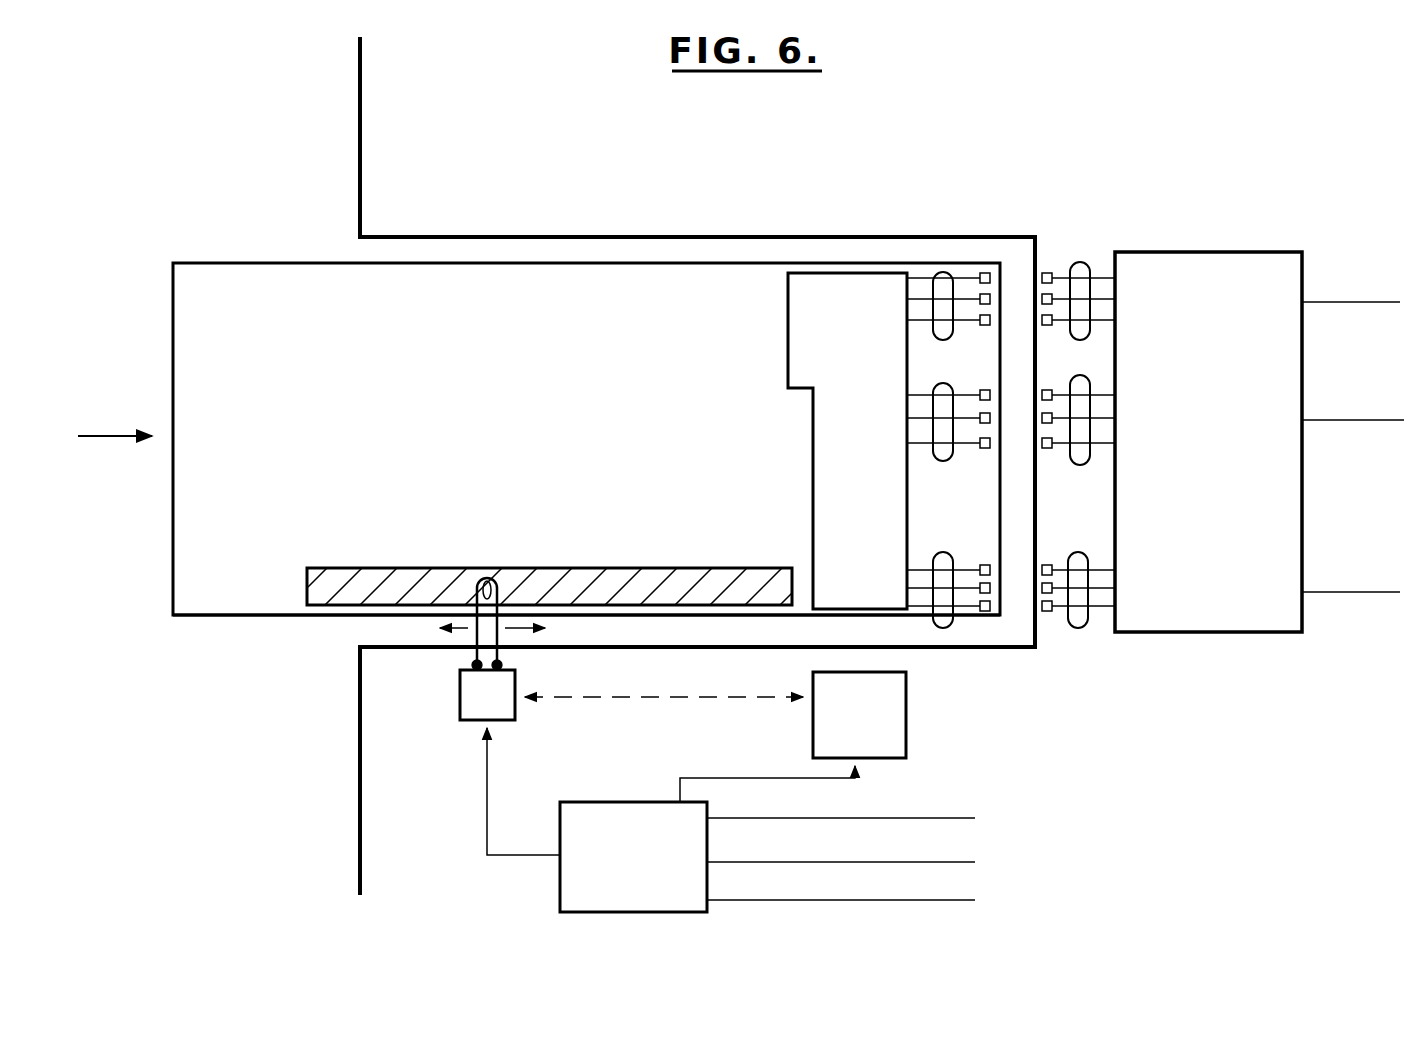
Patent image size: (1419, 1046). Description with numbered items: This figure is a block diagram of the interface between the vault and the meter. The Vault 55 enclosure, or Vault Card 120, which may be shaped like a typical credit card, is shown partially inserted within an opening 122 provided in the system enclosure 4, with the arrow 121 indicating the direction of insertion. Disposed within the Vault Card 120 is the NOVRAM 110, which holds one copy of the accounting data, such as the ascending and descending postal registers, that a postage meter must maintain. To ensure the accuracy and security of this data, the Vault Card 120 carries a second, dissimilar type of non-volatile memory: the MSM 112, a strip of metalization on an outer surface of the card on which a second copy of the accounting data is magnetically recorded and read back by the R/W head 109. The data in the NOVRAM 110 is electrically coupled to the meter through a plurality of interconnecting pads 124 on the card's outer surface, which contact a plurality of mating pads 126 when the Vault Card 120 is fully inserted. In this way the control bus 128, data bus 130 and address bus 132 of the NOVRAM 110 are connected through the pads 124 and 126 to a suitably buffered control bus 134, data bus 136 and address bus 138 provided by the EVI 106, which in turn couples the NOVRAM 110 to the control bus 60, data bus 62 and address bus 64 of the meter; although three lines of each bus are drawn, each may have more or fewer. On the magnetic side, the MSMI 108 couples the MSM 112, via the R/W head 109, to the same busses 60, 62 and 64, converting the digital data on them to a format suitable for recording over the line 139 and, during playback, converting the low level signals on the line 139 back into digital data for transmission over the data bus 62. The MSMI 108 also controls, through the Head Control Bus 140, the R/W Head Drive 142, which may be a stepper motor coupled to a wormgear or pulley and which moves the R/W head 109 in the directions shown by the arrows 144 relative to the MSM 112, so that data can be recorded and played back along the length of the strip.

The enclosure 4 is at (358, 166).
The Vault 55 is at (245, 618).
The control bus 60 is at (1340, 301).
The data bus 62 is at (1336, 420).
The address bus 64 is at (1340, 592).
The EVI 106 is at (1280, 250).
The MSMI 108 is at (616, 800).
The R/W Head 109 is at (459, 698).
The NOVRAM 110 is at (811, 422).
The MSM 112 is at (554, 568).
The Vault Card 120 is at (586, 439).
The arrow 121 is at (104, 462).
The opening 122 is at (678, 238).
The interconnecting pads 124 is at (978, 298).
The mating pads 126 is at (1053, 298).
The control bus 128 is at (943, 340).
The data bus 130 is at (943, 461).
The address bus 132 is at (948, 626).
The control bus 134 is at (1086, 262).
The data bus 136 is at (1084, 376).
The address bus 138 is at (1077, 552).
The line 139 is at (488, 770).
The Head Control Bus 140 is at (750, 776).
The R/W Head Drive 142 is at (909, 691).
The arrows 144 is at (462, 629).